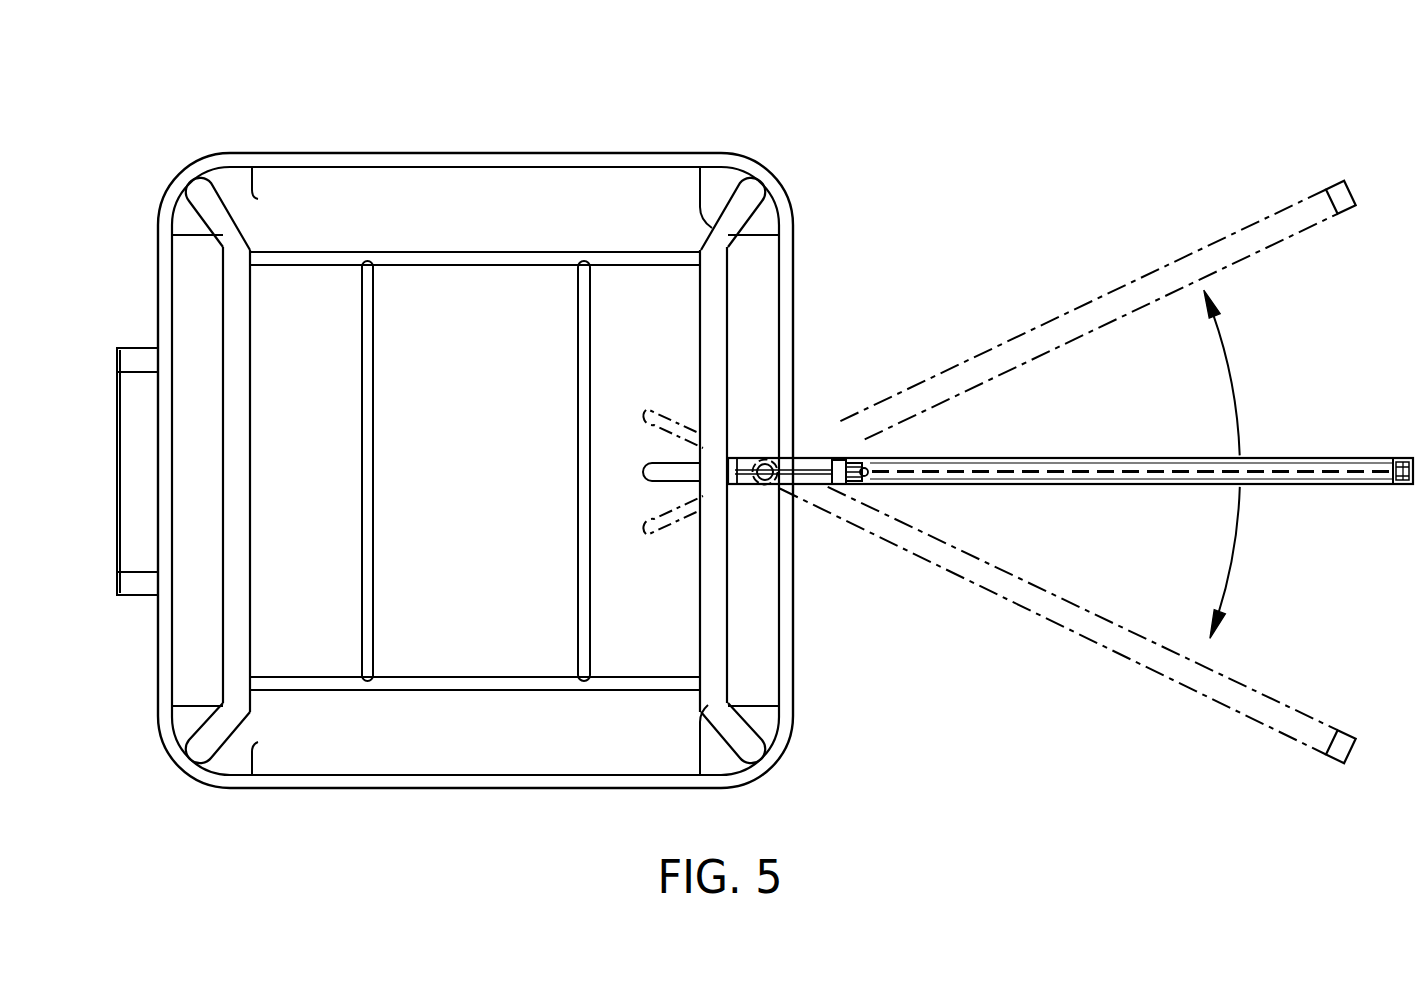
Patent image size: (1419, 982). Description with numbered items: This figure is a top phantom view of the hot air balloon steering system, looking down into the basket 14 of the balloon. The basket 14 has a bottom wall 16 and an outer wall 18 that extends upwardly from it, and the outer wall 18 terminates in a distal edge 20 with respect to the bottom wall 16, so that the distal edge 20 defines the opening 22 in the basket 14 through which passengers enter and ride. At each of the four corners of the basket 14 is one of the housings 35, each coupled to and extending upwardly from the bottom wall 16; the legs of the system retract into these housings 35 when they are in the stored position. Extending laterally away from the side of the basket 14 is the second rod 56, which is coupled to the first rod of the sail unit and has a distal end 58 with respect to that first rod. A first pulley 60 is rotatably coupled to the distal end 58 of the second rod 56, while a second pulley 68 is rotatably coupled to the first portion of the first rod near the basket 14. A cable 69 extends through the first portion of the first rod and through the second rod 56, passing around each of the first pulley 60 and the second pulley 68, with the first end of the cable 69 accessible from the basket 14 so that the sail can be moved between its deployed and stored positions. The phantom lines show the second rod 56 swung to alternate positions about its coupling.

The basket 14 is at (535, 160).
The bottom wall 16 is at (322, 198).
The outer wall 18 is at (435, 157).
The distal edge 20 is at (777, 203).
The opening 22 is at (618, 205).
The housings 35 is at (255, 198).
The second rod 56 is at (1148, 490).
The distal end 58 is at (1414, 455).
The first pulley 60 is at (1414, 480).
The second pulley 68 is at (851, 462).
The cable 69 is at (1000, 474).